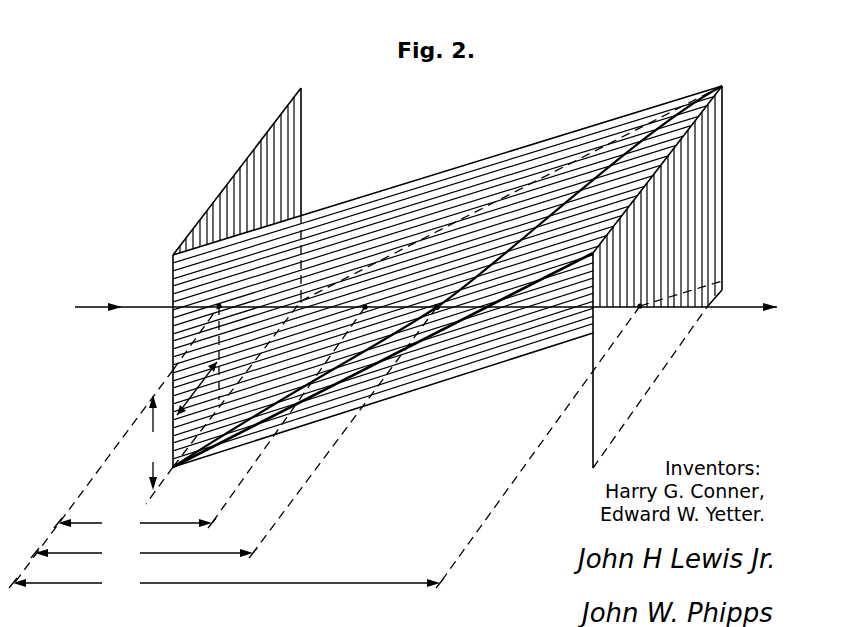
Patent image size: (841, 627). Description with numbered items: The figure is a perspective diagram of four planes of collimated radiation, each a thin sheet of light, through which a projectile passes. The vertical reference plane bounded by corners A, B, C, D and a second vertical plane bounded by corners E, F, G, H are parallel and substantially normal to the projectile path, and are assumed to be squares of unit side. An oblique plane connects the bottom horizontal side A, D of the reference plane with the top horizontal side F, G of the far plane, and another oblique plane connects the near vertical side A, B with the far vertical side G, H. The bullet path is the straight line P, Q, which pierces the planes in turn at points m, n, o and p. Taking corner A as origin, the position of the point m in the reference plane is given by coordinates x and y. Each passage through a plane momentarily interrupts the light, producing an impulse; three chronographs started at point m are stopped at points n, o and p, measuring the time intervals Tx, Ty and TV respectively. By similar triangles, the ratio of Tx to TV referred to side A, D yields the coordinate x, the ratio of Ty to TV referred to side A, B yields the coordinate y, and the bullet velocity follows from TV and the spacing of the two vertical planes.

The corner A is at (383, 370).
The corner B is at (161, 356).
The corner C is at (247, 165).
The corner D is at (291, 290).
The corner E is at (579, 365).
The corner F is at (650, 170).
The corner G is at (732, 182).
The corner H is at (669, 371).
The bullet path start point P is at (415, 302).
The bullet path end point Q is at (783, 306).
The point of intersection m is at (223, 296).
The point of intersection n is at (369, 296).
The point of intersection o is at (446, 296).
The point of intersection p is at (650, 296).
The x coordinate x is at (197, 388).
The y coordinate y is at (151, 442).
The time interval Tx is at (135, 524).
The time interval Ty is at (144, 554).
The time interval Tv TV is at (226, 584).